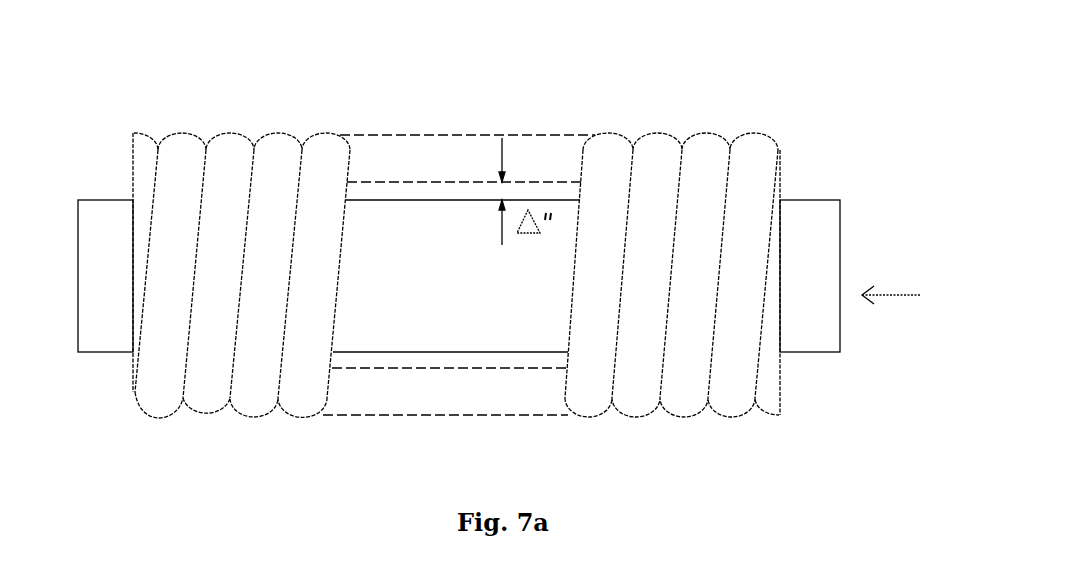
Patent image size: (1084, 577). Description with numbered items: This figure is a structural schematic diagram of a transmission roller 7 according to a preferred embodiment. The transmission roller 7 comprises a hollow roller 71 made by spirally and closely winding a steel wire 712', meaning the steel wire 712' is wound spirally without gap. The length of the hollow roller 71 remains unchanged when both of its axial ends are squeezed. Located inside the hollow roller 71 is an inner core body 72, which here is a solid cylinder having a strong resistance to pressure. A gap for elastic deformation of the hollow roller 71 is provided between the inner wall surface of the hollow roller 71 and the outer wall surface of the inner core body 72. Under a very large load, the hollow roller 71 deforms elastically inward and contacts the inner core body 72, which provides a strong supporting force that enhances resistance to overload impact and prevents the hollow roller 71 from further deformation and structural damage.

The transmission roller 7 is at (341, 112).
The hollow roller 71 is at (222, 182).
The inner core body 72 is at (455, 238).
The steel wire 712' is at (672, 248).